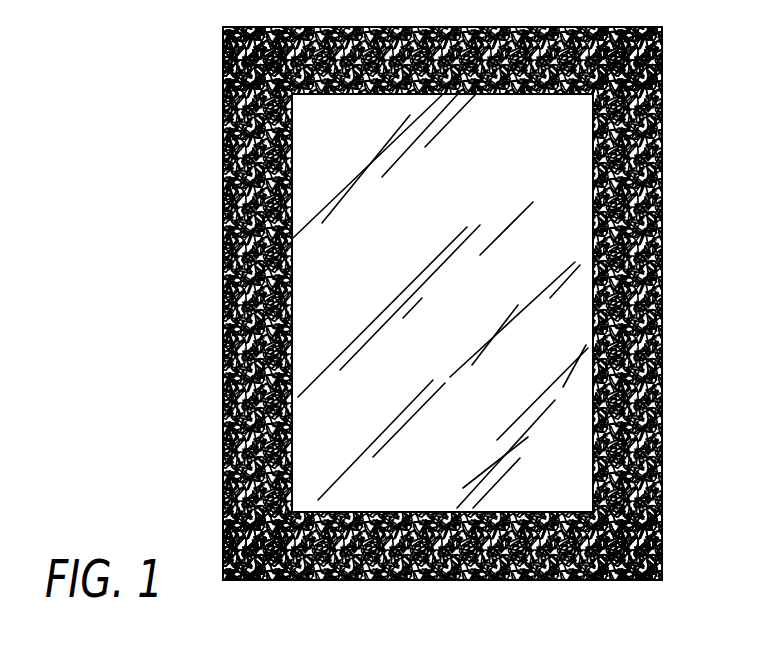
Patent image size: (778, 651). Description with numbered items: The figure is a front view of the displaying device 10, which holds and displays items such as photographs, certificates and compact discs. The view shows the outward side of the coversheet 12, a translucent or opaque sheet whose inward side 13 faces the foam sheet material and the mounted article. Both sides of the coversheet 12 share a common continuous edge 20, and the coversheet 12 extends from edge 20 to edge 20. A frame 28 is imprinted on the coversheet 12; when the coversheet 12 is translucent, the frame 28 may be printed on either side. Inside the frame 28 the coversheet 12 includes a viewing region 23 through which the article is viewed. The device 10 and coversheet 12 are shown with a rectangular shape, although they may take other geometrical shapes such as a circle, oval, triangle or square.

The displaying device 10 is at (206, 61).
The coversheet 12 is at (567, 232).
The inward side 13 is at (587, 302).
The edge 20 is at (662, 477).
The viewing region 23 is at (583, 385).
The frame 28 is at (657, 48).